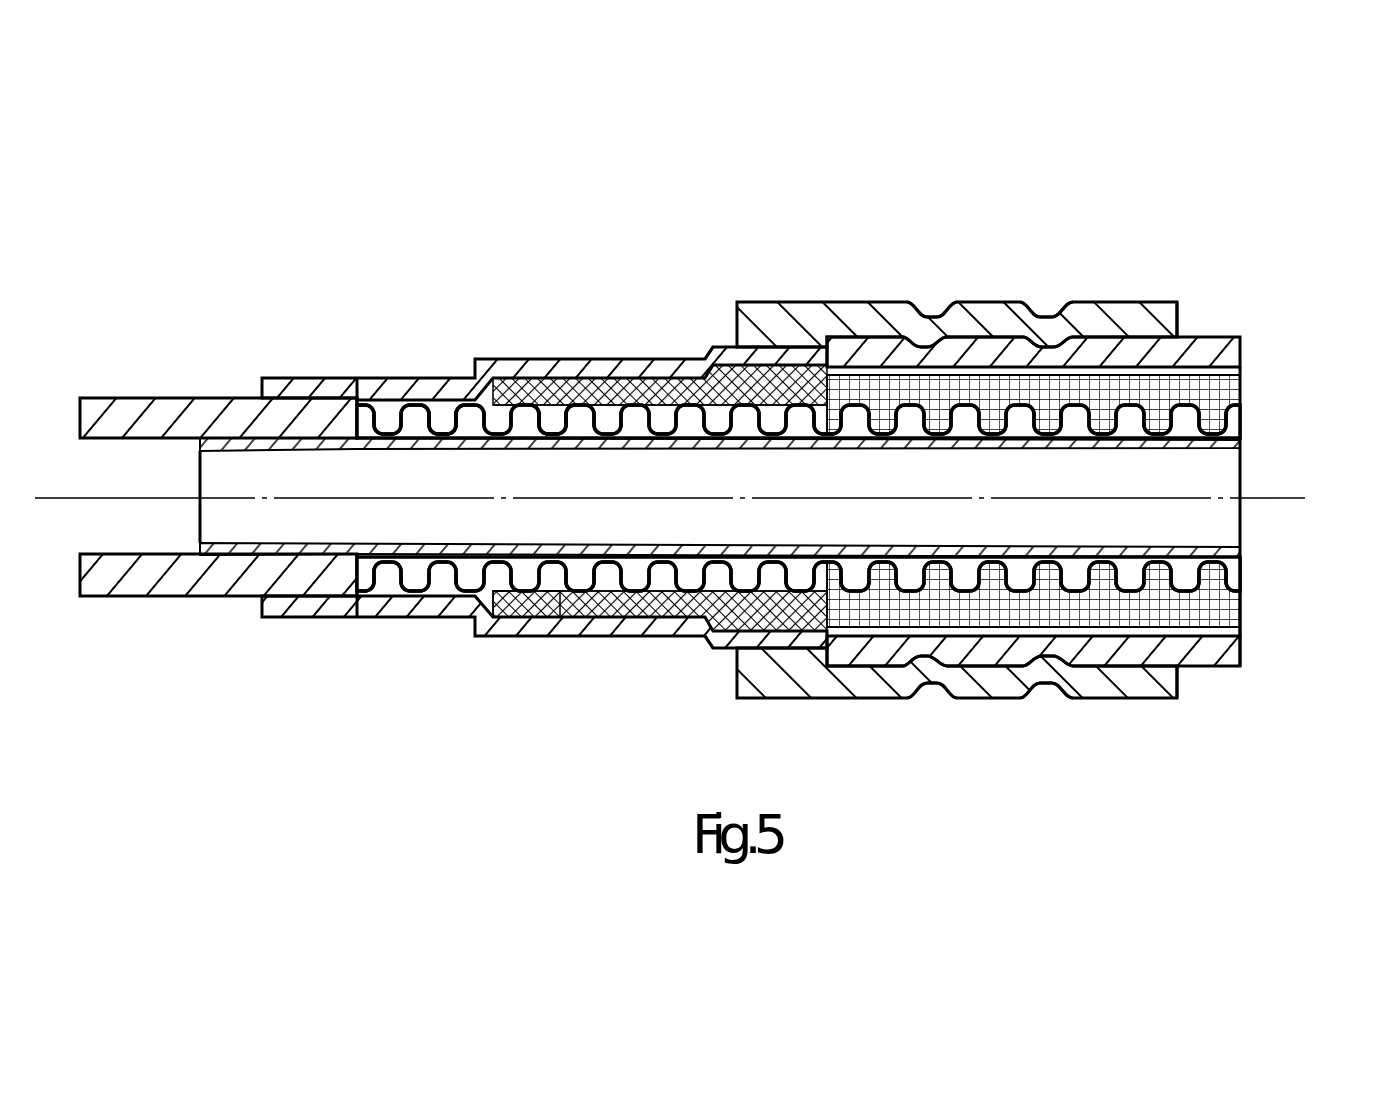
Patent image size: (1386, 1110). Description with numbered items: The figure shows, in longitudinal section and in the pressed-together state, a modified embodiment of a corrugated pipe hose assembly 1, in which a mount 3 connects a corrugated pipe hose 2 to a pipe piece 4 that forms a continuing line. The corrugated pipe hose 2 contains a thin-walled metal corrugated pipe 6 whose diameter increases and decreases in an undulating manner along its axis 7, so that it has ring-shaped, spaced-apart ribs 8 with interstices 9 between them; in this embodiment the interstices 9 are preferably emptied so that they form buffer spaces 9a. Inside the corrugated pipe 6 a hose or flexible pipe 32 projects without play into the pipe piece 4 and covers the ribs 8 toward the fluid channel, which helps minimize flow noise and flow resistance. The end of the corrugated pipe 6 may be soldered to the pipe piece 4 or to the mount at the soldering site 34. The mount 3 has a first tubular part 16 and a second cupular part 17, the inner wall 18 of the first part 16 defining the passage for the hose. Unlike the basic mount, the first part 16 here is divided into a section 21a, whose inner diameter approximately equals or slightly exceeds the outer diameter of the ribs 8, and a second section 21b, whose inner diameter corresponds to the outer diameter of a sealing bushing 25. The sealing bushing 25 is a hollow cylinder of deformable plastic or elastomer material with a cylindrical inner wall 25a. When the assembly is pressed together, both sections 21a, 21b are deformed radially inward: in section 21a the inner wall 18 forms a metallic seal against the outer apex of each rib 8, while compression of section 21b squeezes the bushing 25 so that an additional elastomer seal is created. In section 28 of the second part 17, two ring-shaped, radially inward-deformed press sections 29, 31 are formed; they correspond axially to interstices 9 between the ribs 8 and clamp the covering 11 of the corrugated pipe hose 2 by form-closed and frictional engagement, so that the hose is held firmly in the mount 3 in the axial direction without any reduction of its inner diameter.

The corrugated pipe hose assembly 1 is at (1030, 386).
The corrugated pipe hose 2 is at (1104, 440).
The mount 3 is at (973, 403).
The pipe piece 4 is at (160, 397).
The corrugated pipe 6 is at (845, 404).
The axis 7 is at (1282, 503).
The ribs 8 is at (415, 397).
The interstices 9 is at (442, 418).
The buffer spaces 9a is at (541, 418).
The covering 11 is at (1243, 557).
The first tubular part 16 is at (544, 395).
The second cupular part 17 is at (1133, 320).
The inner wall 18 is at (662, 637).
The section 21a is at (352, 693).
The second section 21b is at (478, 695).
The sealing bushing 25 is at (660, 528).
The cylindrical inner wall 25a is at (542, 591).
The section 28 is at (827, 720).
The press section 29 is at (928, 313).
The press section 31 is at (1057, 313).
The hose or flexible pipe 32 is at (1242, 557).
The soldering site 34 is at (360, 397).